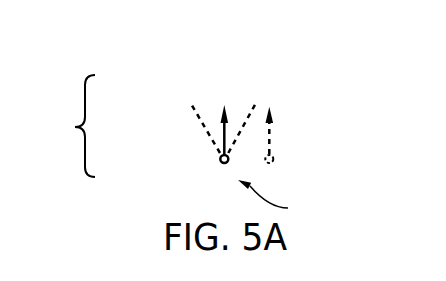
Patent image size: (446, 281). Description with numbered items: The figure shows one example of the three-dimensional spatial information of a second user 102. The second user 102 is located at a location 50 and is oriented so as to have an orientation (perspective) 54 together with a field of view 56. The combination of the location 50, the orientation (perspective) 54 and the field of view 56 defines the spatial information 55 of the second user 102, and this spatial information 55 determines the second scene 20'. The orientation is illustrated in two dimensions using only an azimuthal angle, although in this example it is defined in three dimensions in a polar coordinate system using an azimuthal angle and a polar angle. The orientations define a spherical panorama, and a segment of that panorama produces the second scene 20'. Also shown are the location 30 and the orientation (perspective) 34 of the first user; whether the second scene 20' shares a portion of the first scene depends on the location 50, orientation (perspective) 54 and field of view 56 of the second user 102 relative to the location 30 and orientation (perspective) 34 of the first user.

The spatial information 55 is at (65, 126).
The location 50 is at (218, 161).
The orientation (perspective) 54 is at (222, 130).
The field of view 56 is at (195, 116).
The second scene 20' is at (253, 101).
The location 30 is at (275, 162).
The orientation (perspective) 34 is at (270, 132).
The second user 102 is at (287, 202).